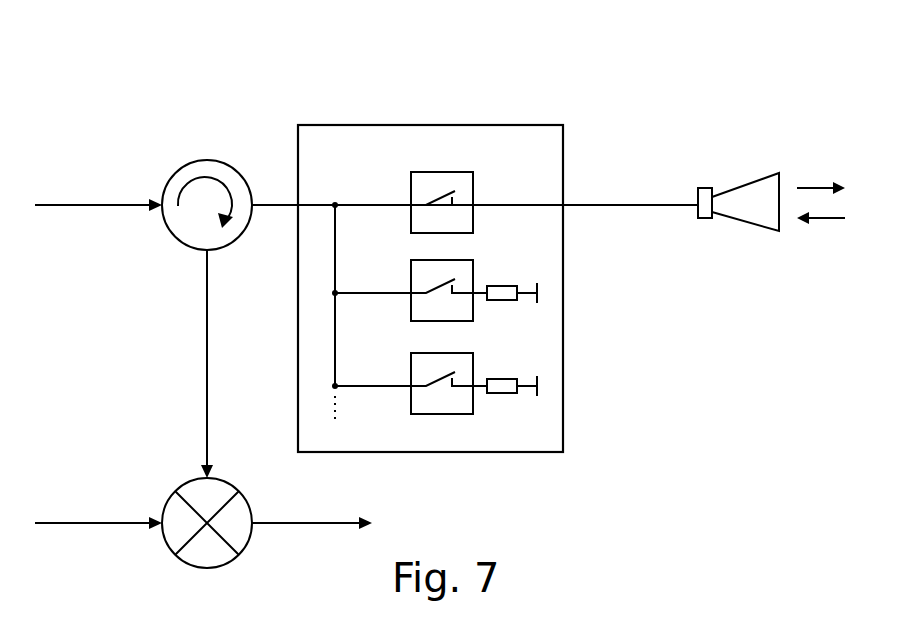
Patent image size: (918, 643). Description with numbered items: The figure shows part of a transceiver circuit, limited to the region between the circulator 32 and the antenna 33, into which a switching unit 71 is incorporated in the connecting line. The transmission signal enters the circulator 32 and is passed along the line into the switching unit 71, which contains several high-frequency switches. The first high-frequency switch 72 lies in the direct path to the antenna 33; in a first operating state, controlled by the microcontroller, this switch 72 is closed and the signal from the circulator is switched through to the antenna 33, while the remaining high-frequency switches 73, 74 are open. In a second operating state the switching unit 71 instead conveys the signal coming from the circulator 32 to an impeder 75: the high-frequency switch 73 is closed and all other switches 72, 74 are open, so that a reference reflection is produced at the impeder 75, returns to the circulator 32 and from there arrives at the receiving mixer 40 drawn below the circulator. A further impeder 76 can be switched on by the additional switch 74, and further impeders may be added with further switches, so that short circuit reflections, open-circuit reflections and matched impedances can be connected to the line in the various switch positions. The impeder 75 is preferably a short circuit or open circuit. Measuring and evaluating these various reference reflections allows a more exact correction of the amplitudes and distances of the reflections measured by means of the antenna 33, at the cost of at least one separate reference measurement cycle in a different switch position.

The circulator 32 is at (197, 161).
The antenna 33 is at (729, 187).
The receiving mixer 40 is at (188, 482).
The switching unit 71 is at (513, 125).
The high-frequency switch 72 is at (433, 174).
The high-frequency switch 73 is at (433, 262).
The high-frequency switch 74 is at (434, 354).
The impeder 75 is at (502, 286).
The impeder 76 is at (501, 379).